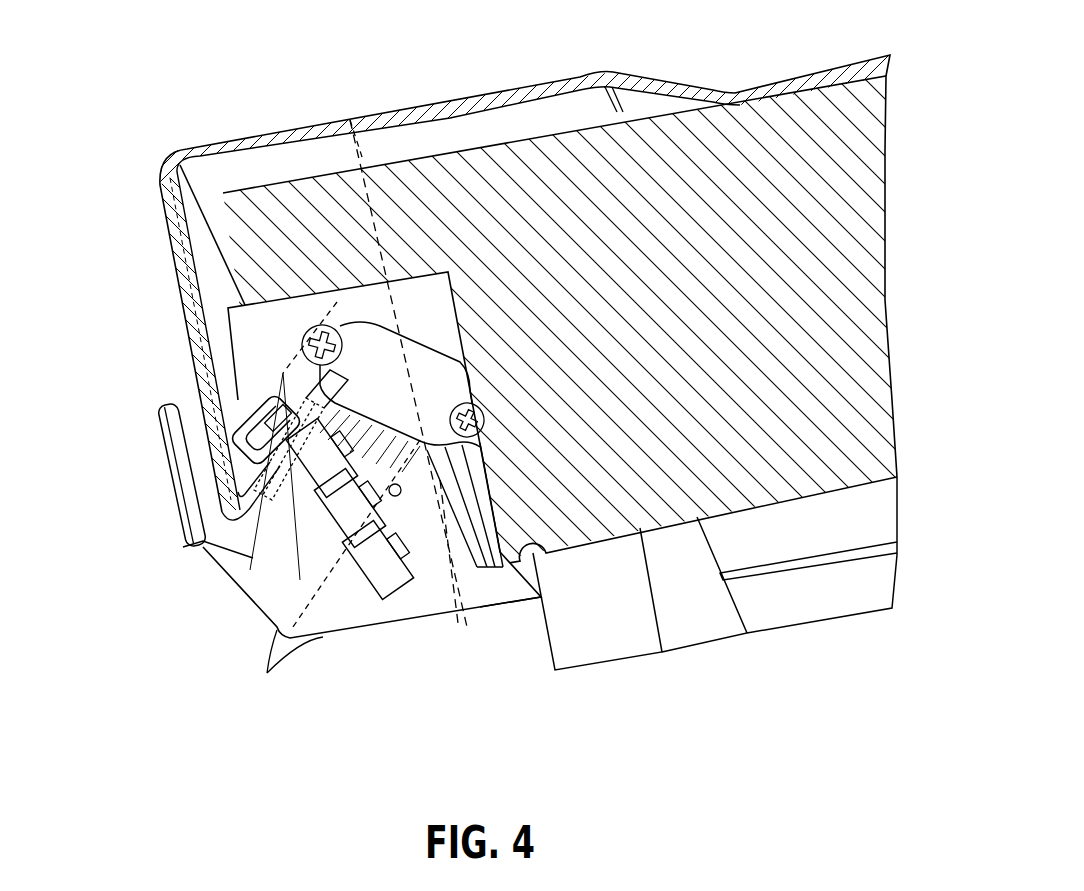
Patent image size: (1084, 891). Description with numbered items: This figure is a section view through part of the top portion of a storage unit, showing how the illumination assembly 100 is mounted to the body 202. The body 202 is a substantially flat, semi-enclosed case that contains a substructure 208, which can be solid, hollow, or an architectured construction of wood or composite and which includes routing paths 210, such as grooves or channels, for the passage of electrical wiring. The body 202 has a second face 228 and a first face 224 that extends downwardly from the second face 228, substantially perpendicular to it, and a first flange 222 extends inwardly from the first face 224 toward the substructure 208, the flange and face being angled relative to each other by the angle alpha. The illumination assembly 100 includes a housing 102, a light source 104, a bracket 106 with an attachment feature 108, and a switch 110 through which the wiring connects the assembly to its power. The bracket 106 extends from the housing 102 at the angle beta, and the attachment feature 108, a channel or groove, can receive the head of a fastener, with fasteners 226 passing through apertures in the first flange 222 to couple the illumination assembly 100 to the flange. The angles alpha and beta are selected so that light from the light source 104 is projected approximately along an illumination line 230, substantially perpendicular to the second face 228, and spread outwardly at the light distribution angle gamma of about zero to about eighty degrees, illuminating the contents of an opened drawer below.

The illumination assembly 100 is at (492, 572).
The housing 102 is at (262, 388).
The light source 104 is at (410, 392).
The bracket 106 is at (250, 400).
The attachment feature 108 is at (238, 420).
The switch 110 is at (172, 466).
The body 202 is at (666, 87).
The substructure 208 is at (878, 245).
The routing paths 210 is at (255, 292).
The first flange 222 is at (258, 540).
The first face 224 is at (205, 440).
The fasteners 226 is at (267, 673).
The second face 228 is at (470, 90).
The illumination line 230 is at (362, 158).